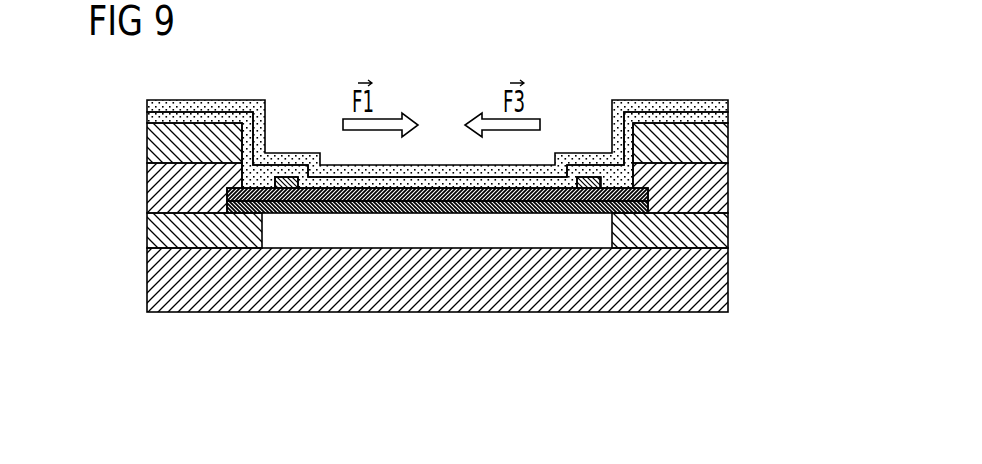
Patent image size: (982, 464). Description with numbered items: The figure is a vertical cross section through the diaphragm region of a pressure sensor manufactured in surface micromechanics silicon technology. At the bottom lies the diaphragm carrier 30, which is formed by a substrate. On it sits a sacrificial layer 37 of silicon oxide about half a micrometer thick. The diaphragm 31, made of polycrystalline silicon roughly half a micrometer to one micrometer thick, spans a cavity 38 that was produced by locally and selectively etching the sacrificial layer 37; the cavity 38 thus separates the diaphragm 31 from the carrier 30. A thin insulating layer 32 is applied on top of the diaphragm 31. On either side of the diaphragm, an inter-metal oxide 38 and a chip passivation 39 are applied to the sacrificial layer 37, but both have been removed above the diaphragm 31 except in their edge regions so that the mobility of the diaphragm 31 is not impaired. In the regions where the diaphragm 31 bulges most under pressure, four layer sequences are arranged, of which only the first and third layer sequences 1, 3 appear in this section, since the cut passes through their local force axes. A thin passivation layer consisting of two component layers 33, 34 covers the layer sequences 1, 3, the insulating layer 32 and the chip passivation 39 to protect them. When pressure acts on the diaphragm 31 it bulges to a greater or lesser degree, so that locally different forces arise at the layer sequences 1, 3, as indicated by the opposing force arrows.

The first layer sequence 1 is at (287, 177).
The third layer sequence 3 is at (588, 177).
The diaphragm carrier 30 is at (723, 288).
The diaphragm 31 is at (452, 213).
The insulating layer 32 is at (400, 202).
The first component layer of passivation layer 33 is at (730, 117).
The second component layer of passivation layer 34 is at (696, 100).
The sacrificial layer 37 is at (148, 230).
The cavity / inter-metal oxide 38 is at (150, 188).
The chip passivation 39 is at (148, 143).